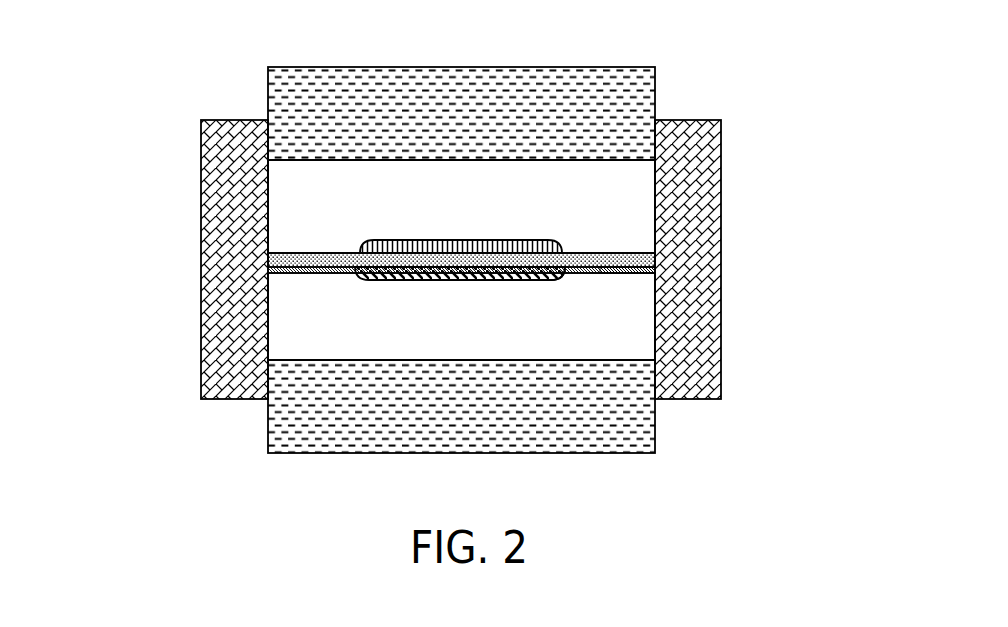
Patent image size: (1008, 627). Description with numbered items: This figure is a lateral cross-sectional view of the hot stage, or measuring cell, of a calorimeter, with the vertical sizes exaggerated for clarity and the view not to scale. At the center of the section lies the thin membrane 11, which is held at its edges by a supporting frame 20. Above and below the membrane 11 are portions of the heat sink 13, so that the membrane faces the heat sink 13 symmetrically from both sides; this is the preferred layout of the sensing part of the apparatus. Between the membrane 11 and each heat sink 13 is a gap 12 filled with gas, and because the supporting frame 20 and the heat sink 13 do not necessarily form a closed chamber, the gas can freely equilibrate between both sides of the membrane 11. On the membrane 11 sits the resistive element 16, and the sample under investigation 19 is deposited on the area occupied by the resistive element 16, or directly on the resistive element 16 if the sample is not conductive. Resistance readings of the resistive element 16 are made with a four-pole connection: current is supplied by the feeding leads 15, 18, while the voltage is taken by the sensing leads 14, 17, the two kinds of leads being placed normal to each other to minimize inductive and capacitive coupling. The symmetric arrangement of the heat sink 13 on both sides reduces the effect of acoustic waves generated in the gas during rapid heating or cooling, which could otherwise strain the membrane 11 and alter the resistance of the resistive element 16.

The membrane 11 is at (300, 258).
The gap filled with gas 12 is at (578, 205).
The heat sink 13 is at (400, 88).
The sensing lead 14 is at (300, 272).
The feeding lead 15 is at (367, 273).
The resistive element 16 is at (483, 278).
The sensing lead 17 is at (630, 270).
The feeding lead 18 is at (558, 277).
The sample under investigation 19 is at (433, 243).
The supporting frame 20 is at (230, 153).